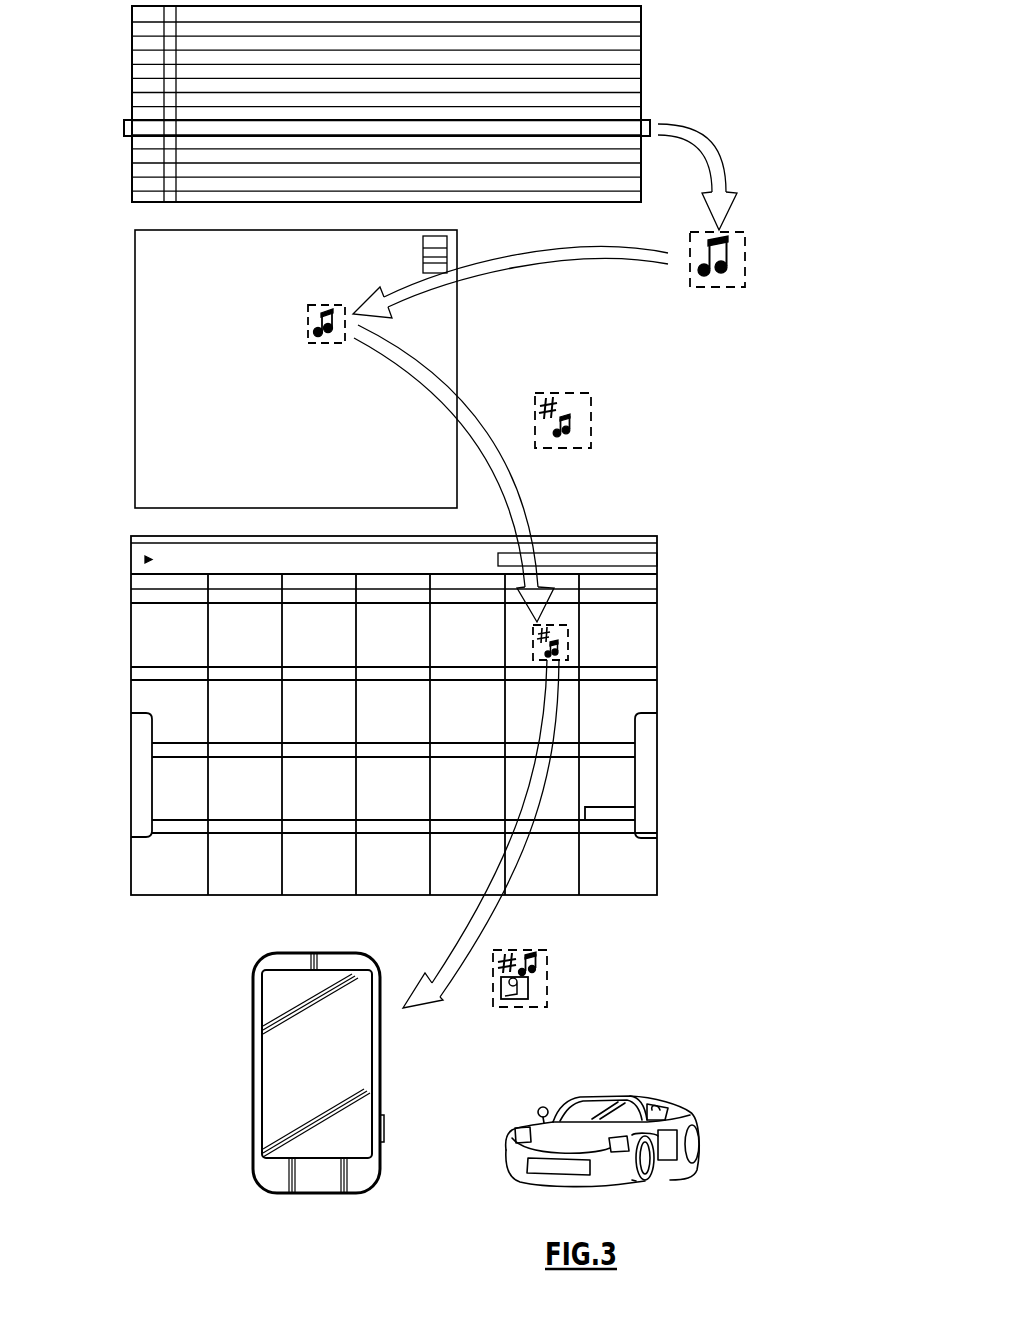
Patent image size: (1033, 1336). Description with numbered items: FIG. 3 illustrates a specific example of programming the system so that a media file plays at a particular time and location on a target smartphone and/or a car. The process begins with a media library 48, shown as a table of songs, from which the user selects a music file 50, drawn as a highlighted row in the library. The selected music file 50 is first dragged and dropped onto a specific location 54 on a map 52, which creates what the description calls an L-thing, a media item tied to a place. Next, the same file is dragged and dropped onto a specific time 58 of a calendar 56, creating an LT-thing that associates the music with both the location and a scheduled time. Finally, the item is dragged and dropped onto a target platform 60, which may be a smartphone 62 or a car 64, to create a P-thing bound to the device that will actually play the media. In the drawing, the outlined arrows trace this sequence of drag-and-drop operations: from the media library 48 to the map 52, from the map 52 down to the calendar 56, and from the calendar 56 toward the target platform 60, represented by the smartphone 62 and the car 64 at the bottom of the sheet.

The media library 48 is at (693, 50).
The music file 50 is at (641, 114).
The map 52 is at (135, 326).
The specific location 54 is at (318, 345).
The calendar 56 is at (131, 698).
The specific time 58 is at (570, 635).
The target platform 60 is at (274, 1117).
The smartphone 62 is at (222, 1125).
The car 64 is at (706, 1180).